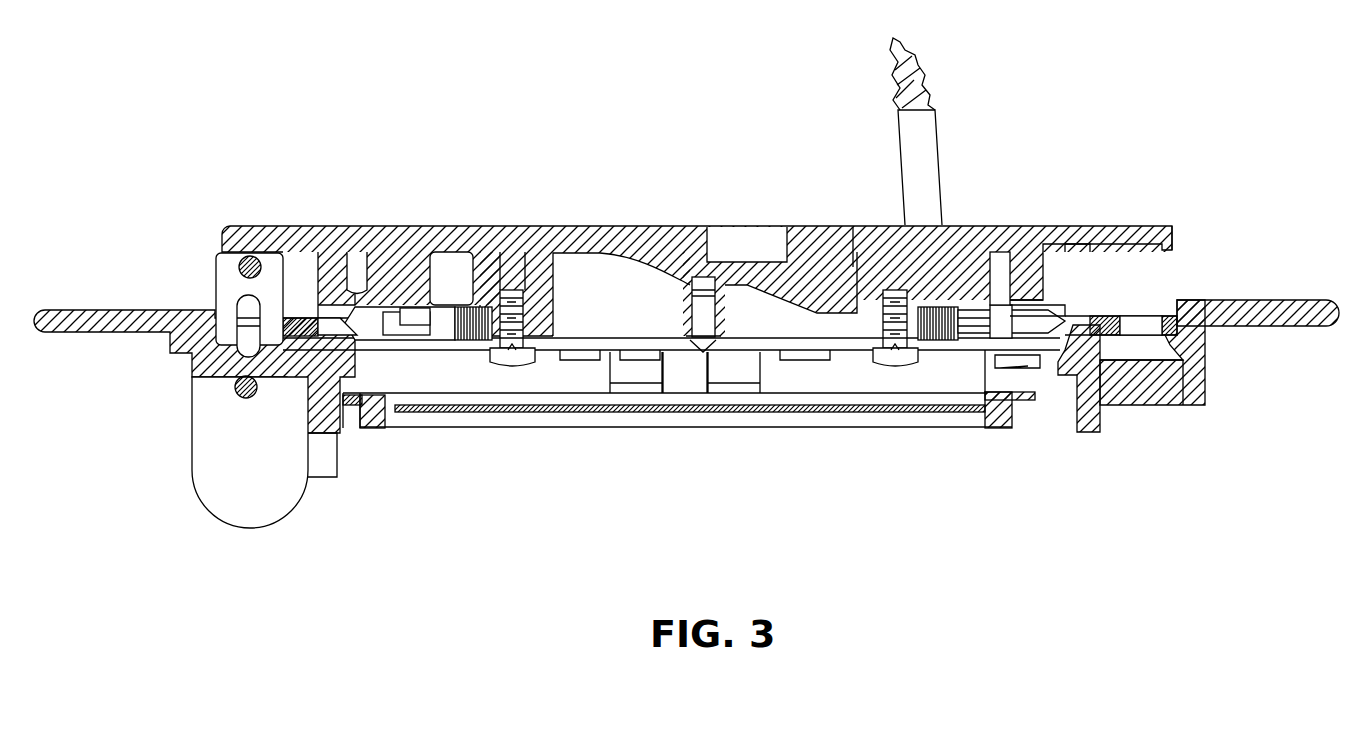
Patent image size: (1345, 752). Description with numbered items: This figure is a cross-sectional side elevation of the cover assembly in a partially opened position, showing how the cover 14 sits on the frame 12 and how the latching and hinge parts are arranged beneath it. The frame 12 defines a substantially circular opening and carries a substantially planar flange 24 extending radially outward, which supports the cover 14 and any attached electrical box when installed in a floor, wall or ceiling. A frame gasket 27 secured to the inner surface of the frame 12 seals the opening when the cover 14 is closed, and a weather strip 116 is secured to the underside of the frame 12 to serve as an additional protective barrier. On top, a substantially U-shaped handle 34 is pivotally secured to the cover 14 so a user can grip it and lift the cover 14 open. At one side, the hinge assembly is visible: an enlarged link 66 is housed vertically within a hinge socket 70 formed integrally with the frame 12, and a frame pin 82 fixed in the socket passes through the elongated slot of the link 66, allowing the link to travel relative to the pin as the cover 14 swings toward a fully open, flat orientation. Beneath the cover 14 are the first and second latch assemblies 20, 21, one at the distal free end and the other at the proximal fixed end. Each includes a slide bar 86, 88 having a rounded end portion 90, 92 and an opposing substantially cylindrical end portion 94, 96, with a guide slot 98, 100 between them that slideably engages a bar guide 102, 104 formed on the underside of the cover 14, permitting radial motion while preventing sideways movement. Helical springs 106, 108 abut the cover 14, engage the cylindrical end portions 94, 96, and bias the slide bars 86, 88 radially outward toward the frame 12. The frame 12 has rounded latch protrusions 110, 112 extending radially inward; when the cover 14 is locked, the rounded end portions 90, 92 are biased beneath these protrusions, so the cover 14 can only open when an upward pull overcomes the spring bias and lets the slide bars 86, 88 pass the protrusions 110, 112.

The frame 12 is at (1225, 250).
The cover 14 is at (512, 240).
The first latch assembly 20 is at (1030, 368).
The second latch assembly 21 is at (375, 374).
The flange 24 is at (1265, 300).
The frame gasket 27 is at (1185, 330).
The handle 34 is at (938, 130).
The enlarged link 66 is at (225, 280).
The hinge socket 70 is at (217, 490).
The frame pin 82 is at (240, 396).
The slide bar 86 is at (1013, 293).
The slide bar 88 is at (388, 305).
The rounded end portion 90 is at (1062, 308).
The rounded end portion 92 is at (357, 320).
The cylindrical end portion 94 is at (975, 333).
The cylindrical end portion 96 is at (433, 340).
The guide slot 98 is at (1043, 300).
The guide slot 100 is at (435, 308).
The bar guide 102 is at (1000, 307).
The bar guide 104 is at (386, 345).
The helical spring 106 is at (932, 340).
The helical spring 108 is at (460, 330).
The latch protrusion 110 is at (1060, 378).
The latch protrusion 112 is at (350, 400).
The weather strip 116 is at (505, 413).